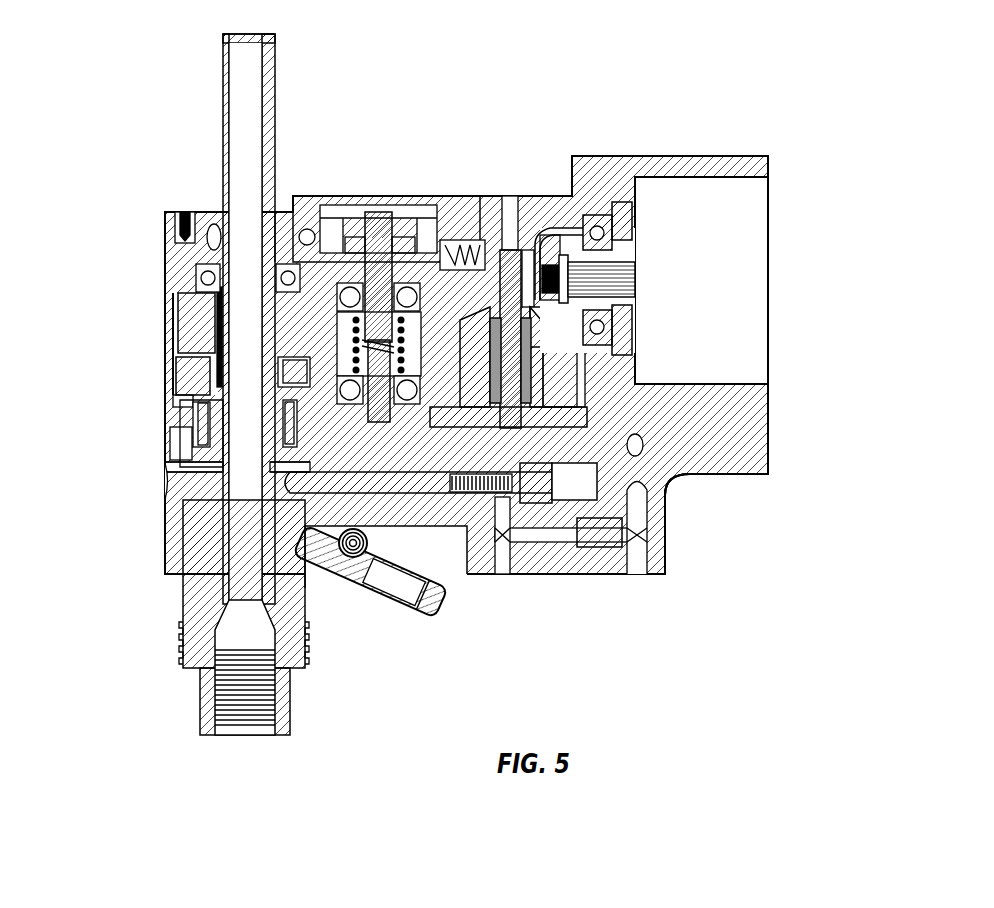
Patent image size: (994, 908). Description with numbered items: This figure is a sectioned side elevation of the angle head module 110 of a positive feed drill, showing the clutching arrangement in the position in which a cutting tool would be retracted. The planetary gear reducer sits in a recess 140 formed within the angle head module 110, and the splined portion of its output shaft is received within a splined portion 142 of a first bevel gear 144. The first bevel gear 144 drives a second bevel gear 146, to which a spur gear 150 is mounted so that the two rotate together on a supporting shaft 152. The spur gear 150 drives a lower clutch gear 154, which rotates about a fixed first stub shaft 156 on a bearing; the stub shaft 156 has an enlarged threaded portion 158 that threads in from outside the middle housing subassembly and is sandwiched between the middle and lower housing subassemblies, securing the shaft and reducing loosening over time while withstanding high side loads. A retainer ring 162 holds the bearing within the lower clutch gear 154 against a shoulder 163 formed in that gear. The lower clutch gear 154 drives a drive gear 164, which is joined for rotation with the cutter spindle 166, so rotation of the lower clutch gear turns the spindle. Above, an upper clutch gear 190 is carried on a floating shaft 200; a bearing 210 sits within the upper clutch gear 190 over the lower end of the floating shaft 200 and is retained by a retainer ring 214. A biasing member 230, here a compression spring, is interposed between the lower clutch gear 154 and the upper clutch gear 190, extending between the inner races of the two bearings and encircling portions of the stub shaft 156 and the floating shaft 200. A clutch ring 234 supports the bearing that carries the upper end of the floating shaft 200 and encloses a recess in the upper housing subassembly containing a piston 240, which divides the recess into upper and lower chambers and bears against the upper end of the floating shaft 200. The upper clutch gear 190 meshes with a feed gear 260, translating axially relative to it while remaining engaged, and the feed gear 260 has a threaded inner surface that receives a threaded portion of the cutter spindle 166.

The angle head module 110 is at (744, 128).
The recess 140 is at (713, 177).
The splined portion 142 is at (635, 268).
The first bevel gear 144 is at (558, 223).
The second bevel gear 146 is at (545, 340).
The spur gear 150 is at (720, 472).
The shaft 152 is at (505, 405).
The lower clutch gear 154 is at (525, 440).
The first stub shaft 156 is at (520, 482).
The threaded portion 158 is at (470, 417).
The retainer ring 162 is at (320, 355).
The shoulder 163 is at (358, 553).
The drive gear 164 is at (168, 358).
The cutter spindle 166 is at (292, 702).
The upper clutch gear 190 is at (497, 260).
The floating shaft 200 is at (387, 233).
The bearing 210 is at (303, 231).
The retainer ring 214 is at (283, 253).
The biasing member 230 is at (190, 406).
The clutch ring 234 is at (327, 253).
The piston 240 is at (455, 197).
The feed gear 260 is at (178, 320).